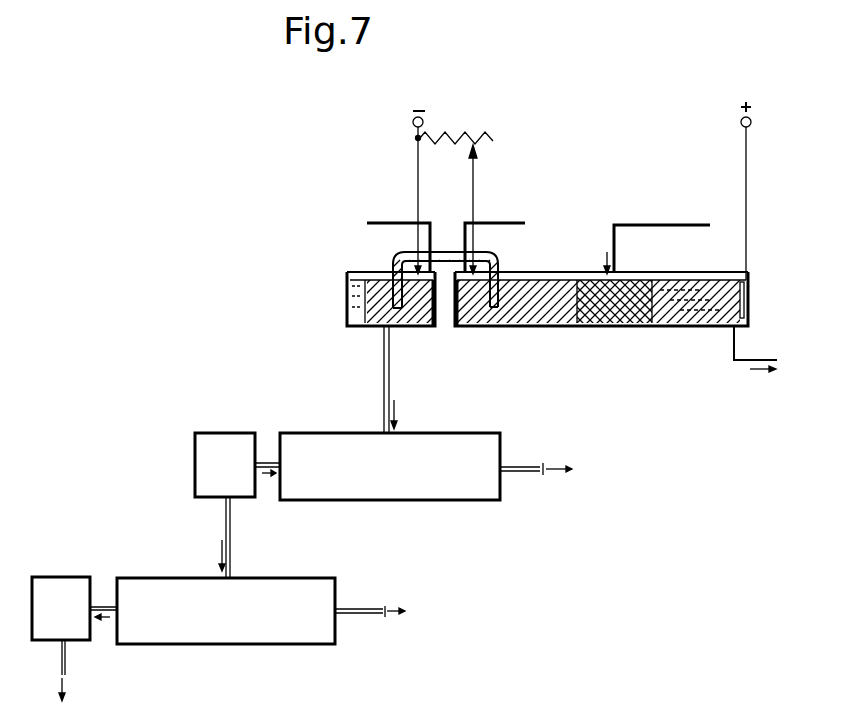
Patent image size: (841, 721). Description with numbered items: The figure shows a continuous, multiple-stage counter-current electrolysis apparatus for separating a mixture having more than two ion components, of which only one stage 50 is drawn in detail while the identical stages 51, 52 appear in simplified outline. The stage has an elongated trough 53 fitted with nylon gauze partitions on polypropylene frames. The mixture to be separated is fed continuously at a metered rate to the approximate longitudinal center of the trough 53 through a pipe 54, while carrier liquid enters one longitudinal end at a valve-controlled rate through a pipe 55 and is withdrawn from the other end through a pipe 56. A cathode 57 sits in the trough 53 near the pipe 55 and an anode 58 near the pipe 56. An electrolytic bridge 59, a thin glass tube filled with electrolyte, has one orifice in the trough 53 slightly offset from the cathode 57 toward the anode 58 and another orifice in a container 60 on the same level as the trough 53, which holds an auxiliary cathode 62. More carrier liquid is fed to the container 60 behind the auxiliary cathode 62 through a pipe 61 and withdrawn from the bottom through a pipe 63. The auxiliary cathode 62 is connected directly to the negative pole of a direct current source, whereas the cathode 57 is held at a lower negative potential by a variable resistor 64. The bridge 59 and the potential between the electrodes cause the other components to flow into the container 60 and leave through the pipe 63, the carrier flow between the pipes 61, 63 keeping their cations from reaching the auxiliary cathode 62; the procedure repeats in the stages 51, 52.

The stage 50 is at (548, 251).
The stage 51 is at (187, 425).
The stage 52 is at (70, 551).
The trough 53 is at (662, 328).
The pipe 54 is at (626, 224).
The pipe 55 is at (505, 223).
The pipe 56 is at (742, 362).
The cathode 57 is at (473, 311).
The anode 58 is at (741, 290).
The electrolytic bridge 59 is at (443, 250).
The container 60 is at (347, 305).
The pipe 61 is at (380, 222).
The auxiliary cathode 62 is at (431, 318).
The pipe 63 is at (390, 381).
The variable resistor 64 is at (466, 139).